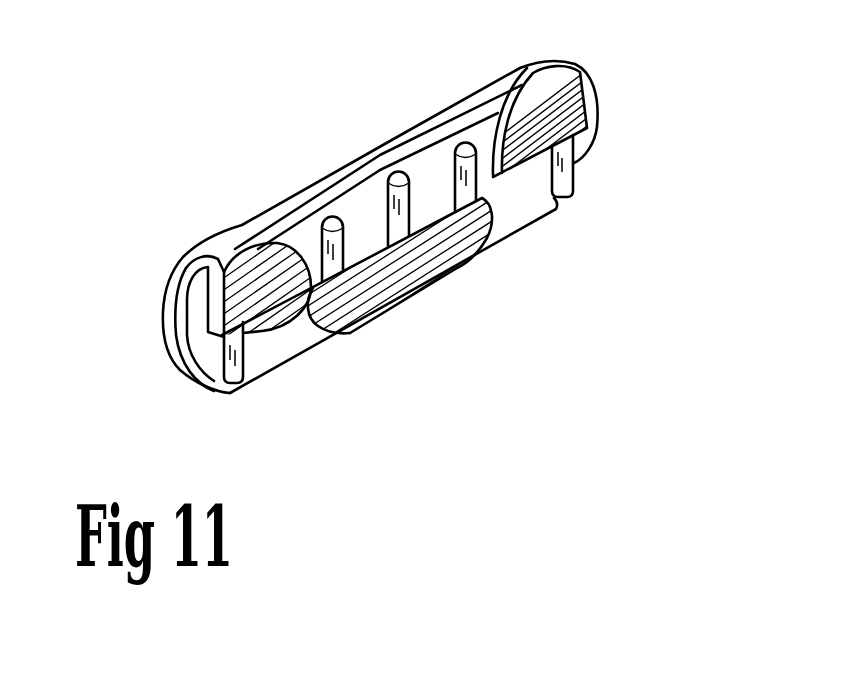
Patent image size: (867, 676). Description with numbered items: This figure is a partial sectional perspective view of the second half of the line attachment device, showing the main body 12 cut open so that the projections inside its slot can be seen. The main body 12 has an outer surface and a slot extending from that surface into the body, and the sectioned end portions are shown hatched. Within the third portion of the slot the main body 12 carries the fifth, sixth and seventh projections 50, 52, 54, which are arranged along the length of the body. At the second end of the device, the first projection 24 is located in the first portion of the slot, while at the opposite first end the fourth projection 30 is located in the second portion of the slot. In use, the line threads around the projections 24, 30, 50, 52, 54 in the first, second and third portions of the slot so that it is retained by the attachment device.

The main body 12 is at (367, 203).
The first projection 24 is at (565, 168).
The fourth projection 30 is at (240, 350).
The fifth projection 50 is at (468, 160).
The sixth projection 52 is at (410, 228).
The seventh projection 54 is at (320, 247).